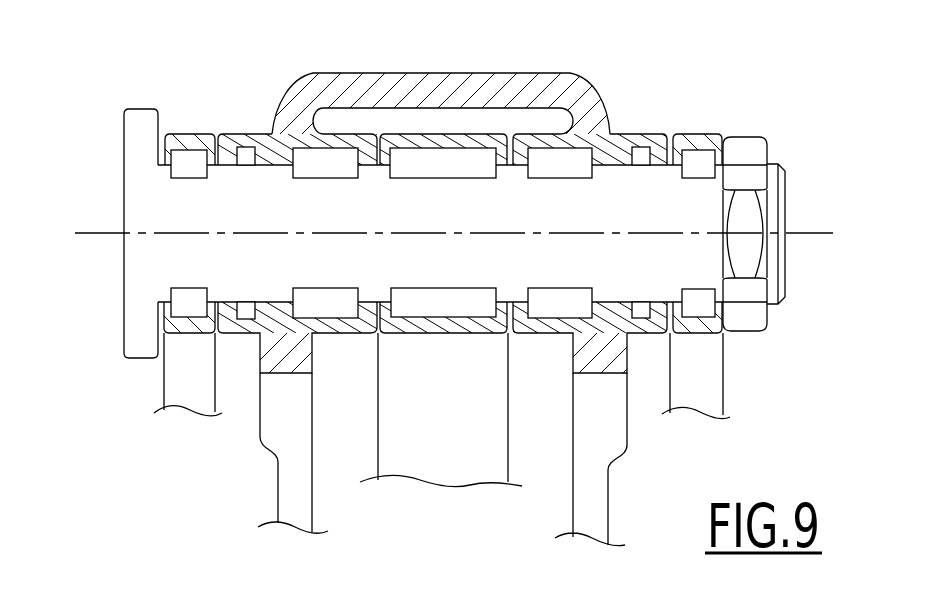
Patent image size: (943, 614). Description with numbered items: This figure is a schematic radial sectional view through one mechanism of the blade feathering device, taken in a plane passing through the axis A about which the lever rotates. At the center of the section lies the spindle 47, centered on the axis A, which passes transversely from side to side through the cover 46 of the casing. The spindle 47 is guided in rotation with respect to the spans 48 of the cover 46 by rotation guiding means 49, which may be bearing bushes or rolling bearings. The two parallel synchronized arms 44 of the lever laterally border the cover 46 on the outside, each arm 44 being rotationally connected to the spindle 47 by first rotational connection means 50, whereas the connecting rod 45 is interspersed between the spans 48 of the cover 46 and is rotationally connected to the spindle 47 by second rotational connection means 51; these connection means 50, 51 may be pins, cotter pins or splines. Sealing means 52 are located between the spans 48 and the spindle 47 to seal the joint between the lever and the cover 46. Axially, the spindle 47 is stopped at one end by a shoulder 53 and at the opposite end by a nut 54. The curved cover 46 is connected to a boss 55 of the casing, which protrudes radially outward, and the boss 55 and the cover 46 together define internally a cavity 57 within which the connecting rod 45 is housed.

The arm 44 is at (183, 380).
The connecting rod 45 is at (455, 423).
The cover 46 is at (563, 65).
The spindle 47 is at (116, 189).
The spans 48 is at (273, 157).
The rotation guiding means 49 is at (305, 160).
The first rotational connection means 50 is at (187, 162).
The second rotational connection means 51 is at (423, 165).
The sealing means 52 is at (243, 155).
The shoulder 53 is at (160, 121).
The nut 54 is at (748, 160).
The boss 55 is at (269, 497).
The cavity 57 is at (360, 458).
The axis A is at (816, 232).